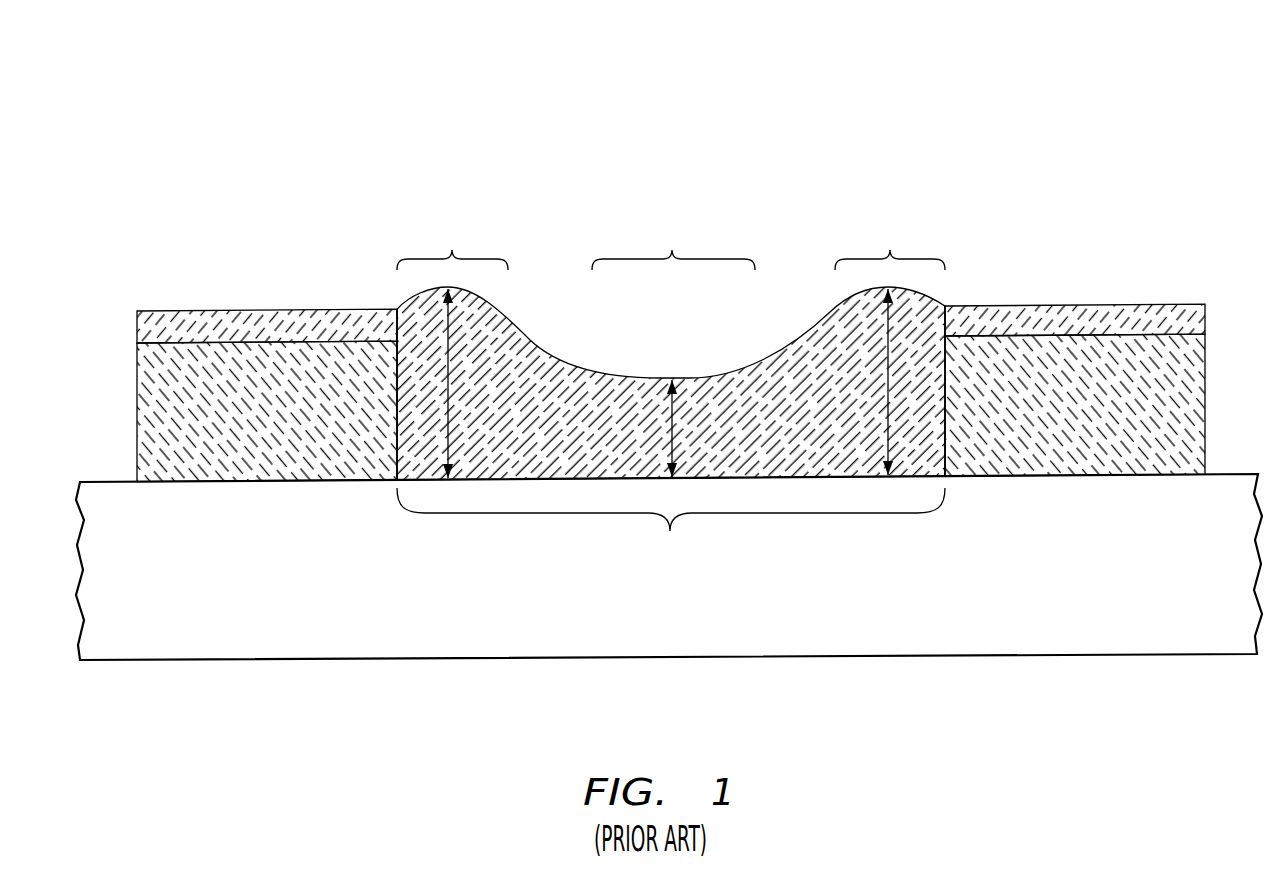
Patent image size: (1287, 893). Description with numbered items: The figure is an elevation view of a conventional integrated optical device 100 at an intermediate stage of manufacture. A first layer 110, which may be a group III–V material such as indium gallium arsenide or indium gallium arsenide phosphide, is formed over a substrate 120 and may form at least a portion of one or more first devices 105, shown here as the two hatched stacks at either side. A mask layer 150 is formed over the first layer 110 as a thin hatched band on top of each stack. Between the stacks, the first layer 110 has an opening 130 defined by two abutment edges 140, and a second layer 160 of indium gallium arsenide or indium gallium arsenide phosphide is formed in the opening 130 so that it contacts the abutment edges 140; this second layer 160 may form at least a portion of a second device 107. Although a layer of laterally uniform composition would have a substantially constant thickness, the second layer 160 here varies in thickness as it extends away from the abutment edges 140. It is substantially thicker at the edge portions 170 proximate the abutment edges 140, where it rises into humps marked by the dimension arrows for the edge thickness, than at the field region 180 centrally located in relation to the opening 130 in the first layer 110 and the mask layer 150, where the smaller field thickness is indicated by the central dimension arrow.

The integrated optical device 100 is at (219, 85).
The first devices 105 is at (137, 284).
The second device 107 is at (539, 183).
The first layer 110 is at (149, 421).
The substrate 120 is at (97, 554).
The opening 130 is at (671, 532).
The abutment edges 140 is at (401, 405).
The mask layer 150 is at (148, 328).
The second layer 160 is at (793, 351).
The edge portions 170 is at (671, 343).
The field region 180 is at (673, 342).